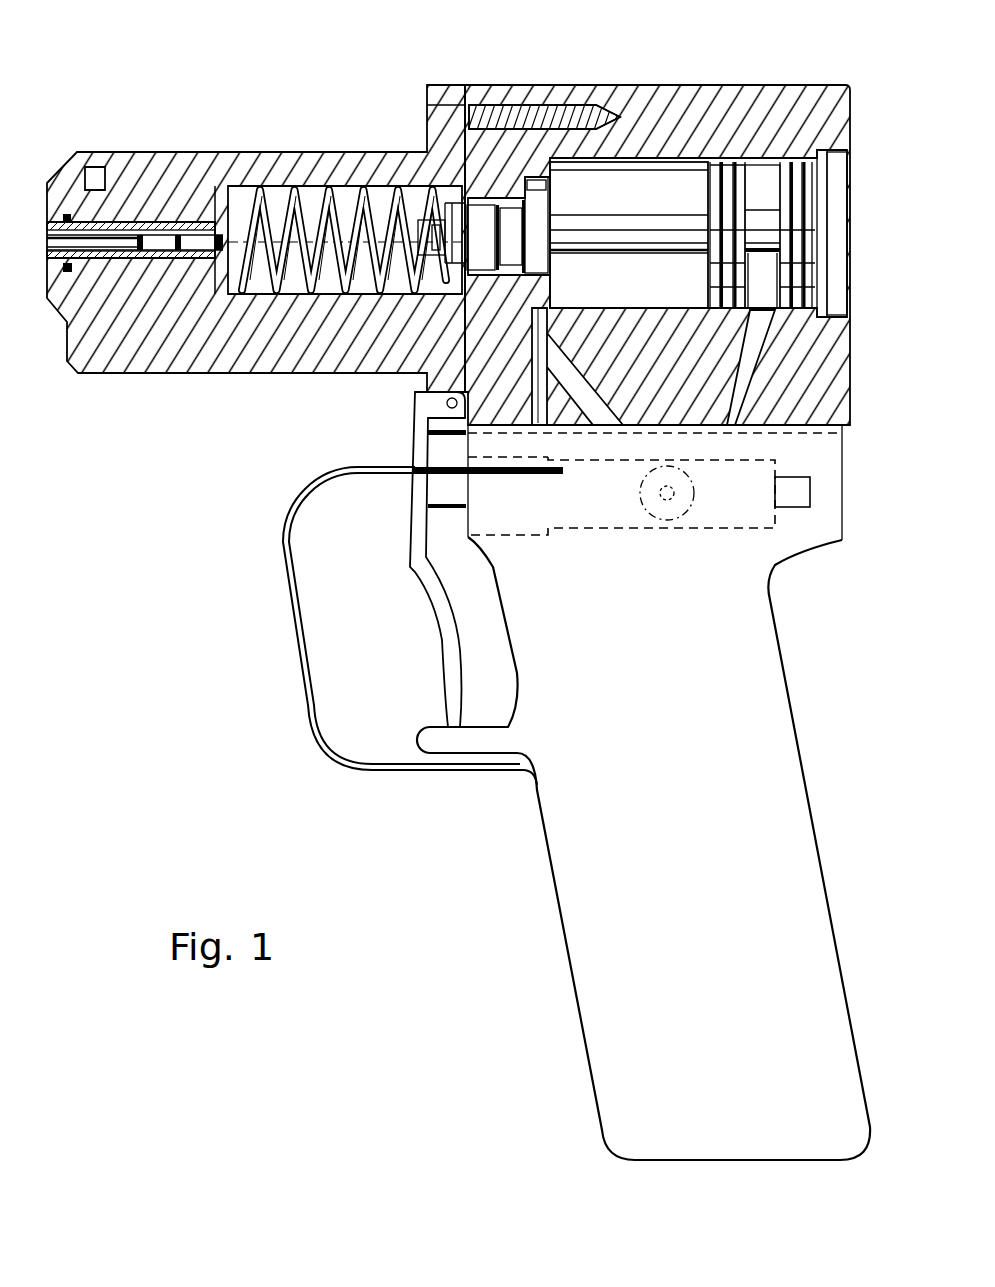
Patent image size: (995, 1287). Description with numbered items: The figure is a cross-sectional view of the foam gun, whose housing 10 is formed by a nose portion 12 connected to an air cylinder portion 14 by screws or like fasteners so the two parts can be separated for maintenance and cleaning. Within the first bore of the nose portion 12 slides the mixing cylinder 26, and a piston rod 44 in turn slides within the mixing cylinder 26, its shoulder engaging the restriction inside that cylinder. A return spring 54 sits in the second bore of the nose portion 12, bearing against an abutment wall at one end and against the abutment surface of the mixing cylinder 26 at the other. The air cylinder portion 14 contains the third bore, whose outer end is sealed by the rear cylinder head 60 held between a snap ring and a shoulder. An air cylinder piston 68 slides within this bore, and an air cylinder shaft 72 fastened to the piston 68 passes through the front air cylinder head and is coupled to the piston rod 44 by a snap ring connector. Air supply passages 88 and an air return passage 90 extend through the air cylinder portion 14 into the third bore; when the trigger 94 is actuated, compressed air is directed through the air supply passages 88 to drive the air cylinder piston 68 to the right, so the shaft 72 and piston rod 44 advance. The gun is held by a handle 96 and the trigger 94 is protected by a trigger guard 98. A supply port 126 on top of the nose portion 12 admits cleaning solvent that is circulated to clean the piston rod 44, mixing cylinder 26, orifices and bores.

The housing 10 is at (476, 70).
The nose portion 12 is at (290, 373).
The air cylinder portion 14 is at (700, 90).
The mixing cylinder 26 is at (135, 225).
The piston rod 44 is at (193, 222).
The return spring 54 is at (297, 190).
The rear cylinder head 60 is at (808, 247).
The air cylinder piston 68 is at (748, 158).
The air cylinder shaft 72 is at (550, 185).
The air supply passages 88 is at (538, 423).
The air return passage 90 is at (753, 310).
The trigger 94 is at (445, 660).
The handle 96 is at (597, 1040).
The trigger guard 98 is at (305, 688).
The supply port 126 is at (97, 168).